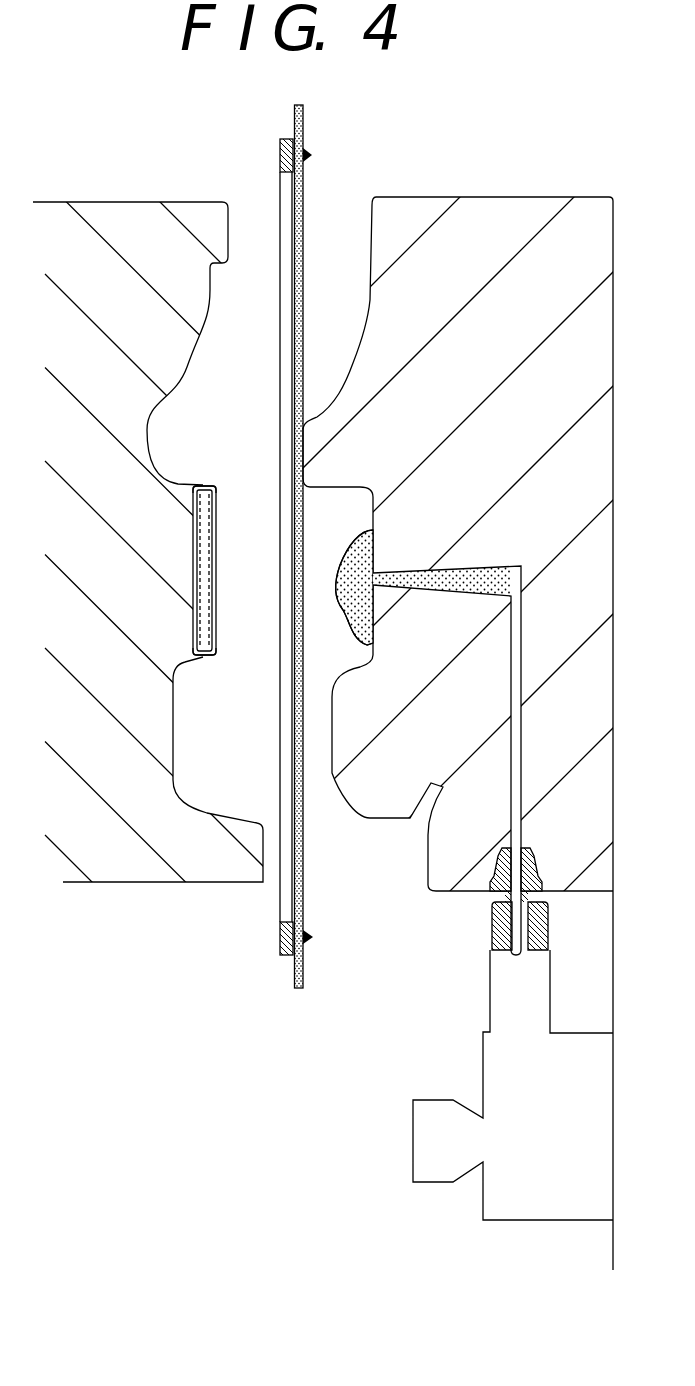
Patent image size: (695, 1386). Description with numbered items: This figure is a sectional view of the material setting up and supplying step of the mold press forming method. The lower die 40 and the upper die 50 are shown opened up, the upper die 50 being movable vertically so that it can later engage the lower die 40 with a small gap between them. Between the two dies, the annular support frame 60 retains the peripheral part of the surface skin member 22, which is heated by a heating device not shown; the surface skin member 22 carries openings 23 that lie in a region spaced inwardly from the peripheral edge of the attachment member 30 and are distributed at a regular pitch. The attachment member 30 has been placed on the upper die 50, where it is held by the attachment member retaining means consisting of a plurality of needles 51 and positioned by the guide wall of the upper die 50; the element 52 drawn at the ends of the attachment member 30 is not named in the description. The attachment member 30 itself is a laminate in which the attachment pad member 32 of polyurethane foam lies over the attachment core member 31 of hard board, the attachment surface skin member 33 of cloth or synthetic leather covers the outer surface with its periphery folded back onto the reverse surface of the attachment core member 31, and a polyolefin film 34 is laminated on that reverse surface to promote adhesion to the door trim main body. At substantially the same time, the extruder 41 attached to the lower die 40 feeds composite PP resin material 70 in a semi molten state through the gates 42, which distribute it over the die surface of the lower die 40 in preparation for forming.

The surface skin member 22 is at (300, 280).
The openings 23 is at (293, 527).
The attachment member 30 is at (173, 549).
The attachment core member 31 is at (195, 598).
The attachment pad member 32 is at (193, 642).
The attachment surface skin member 33 is at (193, 582).
The polyolefin film 34 is at (218, 562).
The lower die 40 is at (520, 452).
The extruder 41 is at (482, 1082).
The gates 42 is at (482, 580).
The upper die 50 is at (63, 532).
The needles 51 is at (193, 580).
The end portion 52 is at (203, 487).
The support frame 60 is at (279, 156).
The composite PP resin material 70 is at (357, 553).